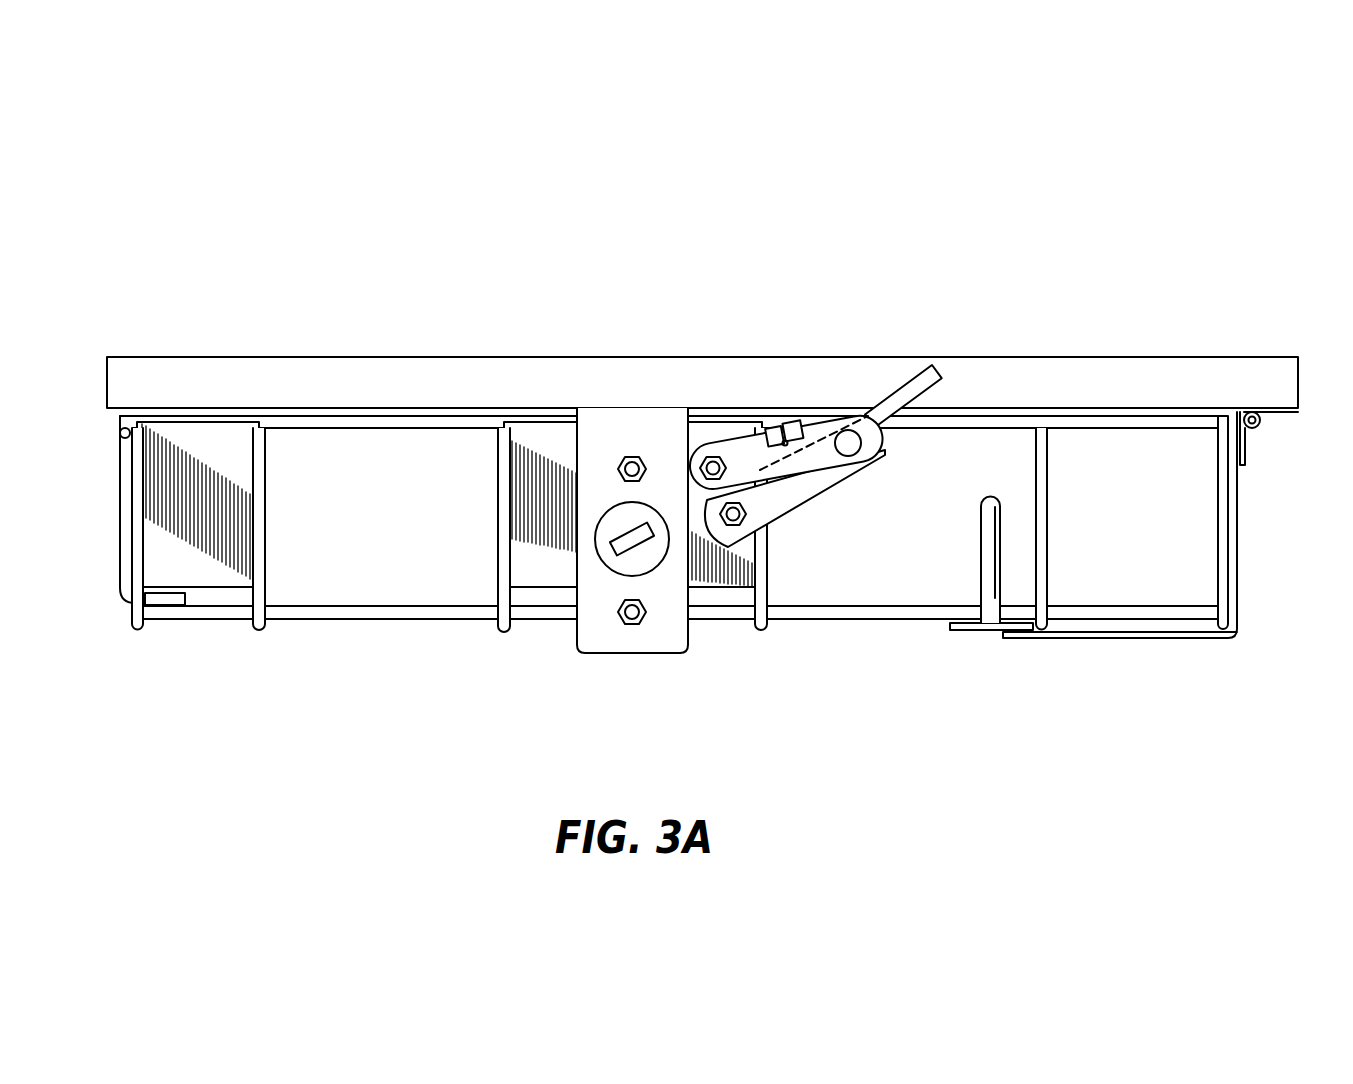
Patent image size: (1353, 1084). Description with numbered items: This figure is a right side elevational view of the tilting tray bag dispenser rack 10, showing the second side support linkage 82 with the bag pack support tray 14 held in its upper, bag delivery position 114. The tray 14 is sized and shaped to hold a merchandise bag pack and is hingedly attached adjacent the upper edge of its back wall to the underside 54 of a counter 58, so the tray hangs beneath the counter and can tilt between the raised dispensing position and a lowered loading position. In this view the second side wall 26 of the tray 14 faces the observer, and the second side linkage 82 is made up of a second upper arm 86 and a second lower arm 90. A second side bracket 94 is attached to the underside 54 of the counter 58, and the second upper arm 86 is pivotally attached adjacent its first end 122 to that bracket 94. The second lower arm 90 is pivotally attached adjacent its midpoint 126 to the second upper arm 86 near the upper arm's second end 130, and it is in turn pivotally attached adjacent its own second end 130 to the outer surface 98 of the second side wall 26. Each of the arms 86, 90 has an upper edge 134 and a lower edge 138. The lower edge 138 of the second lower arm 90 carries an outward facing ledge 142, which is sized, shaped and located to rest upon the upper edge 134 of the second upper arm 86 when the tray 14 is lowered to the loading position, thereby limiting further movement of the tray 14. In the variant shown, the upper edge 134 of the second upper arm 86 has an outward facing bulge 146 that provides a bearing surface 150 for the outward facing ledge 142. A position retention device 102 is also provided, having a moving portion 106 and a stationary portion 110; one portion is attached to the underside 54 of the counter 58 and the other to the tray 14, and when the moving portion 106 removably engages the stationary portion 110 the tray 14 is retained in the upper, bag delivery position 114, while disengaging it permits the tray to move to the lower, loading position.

The tilting tray bag dispenser rack 10 is at (1184, 313).
The bag pack support tray 14 is at (127, 525).
The second side wall 26 is at (202, 572).
The underside 54 is at (432, 410).
The counter 58 is at (335, 355).
The second side support linkage 82 is at (896, 500).
The second upper arm 86 is at (733, 450).
The second lower arm 90 is at (825, 478).
The second side bracket 94 is at (588, 428).
The outer surface 98 is at (553, 572).
The position retention device 102 is at (702, 647).
The moving portion 106 is at (520, 552).
The stationary portion 110 is at (605, 562).
The upper, bag delivery position 114 is at (94, 428).
The first end 122 is at (693, 452).
The midpoint 126 is at (752, 450).
The second end 130 is at (872, 415).
The upper edge 134 is at (800, 425).
The lower edge 138 is at (897, 437).
The outward facing ledge 142 is at (937, 395).
The outward facing bulge 146 is at (785, 446).
The bearing surface 150 is at (792, 428).